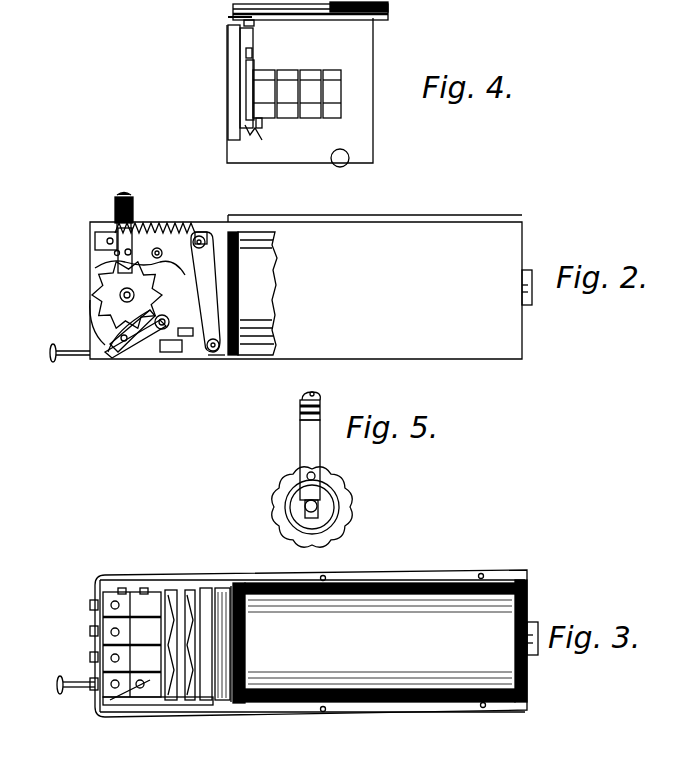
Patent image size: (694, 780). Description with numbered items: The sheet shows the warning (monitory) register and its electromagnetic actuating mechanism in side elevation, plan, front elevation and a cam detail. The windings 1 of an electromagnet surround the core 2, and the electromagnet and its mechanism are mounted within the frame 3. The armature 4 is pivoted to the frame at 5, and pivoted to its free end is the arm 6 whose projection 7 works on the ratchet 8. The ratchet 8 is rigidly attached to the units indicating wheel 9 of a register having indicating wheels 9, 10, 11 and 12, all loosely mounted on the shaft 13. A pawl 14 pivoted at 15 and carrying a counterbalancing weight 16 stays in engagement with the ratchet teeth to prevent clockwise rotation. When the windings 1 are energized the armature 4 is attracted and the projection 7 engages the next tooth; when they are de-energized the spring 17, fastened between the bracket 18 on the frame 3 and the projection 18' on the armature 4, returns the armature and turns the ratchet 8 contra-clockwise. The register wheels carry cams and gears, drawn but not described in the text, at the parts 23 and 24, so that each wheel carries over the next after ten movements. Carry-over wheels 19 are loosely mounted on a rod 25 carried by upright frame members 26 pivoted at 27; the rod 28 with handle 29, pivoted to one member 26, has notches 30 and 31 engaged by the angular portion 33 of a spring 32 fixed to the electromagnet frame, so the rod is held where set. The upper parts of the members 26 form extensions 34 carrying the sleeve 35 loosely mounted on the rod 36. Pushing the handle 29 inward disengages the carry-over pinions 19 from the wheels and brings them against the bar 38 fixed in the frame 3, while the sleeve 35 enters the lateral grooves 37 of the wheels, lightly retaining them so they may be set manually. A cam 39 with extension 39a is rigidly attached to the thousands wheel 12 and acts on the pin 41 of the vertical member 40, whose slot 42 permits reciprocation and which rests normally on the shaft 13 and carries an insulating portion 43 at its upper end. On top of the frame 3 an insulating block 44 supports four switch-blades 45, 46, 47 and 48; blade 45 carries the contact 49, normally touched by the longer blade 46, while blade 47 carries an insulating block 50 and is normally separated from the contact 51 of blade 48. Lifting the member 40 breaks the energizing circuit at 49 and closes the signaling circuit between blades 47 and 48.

In FIG. 3, the windings of an electromagnet 1 is at (400, 585).
In FIG. 3, the core 2 is at (236, 712).
In FIG. 4, the frame 3 is at (240, 130).
In FIG. 2, the frame 3 is at (450, 350).
In FIG. 2, the armature 4 is at (205, 260).
In FIG. 3, the armature 4 is at (226, 592).
In FIG. 2, the pivot 5 is at (195, 360).
In FIG. 3, the arm 6 is at (140, 710).
In FIG. 2, the projection 7 is at (115, 272).
In FIG. 3, the projection 7 is at (410, 778).
In FIG. 2, the ratchet 8 is at (122, 297).
In FIG. 3, the ratchet 8 is at (136, 705).
In FIG. 4, the units indicating wheel 9 is at (344, 96).
In FIG. 2, the units indicating wheel 9 is at (96, 312).
In FIG. 3, the units indicating wheel 9 is at (90, 676).
In FIG. 4, the tens indicating wheel 10 is at (311, 118).
In FIG. 3, the tens indicating wheel 10 is at (90, 656).
In FIG. 4, the hundreds indicating wheel 11 is at (289, 118).
In FIG. 3, the hundreds indicating wheel 11 is at (90, 632).
In FIG. 4, the thousands indicating wheel 12 is at (260, 128).
In FIG. 3, the thousands indicating wheel 12 is at (90, 605).
In FIG. 4, the shaft 13 is at (240, 114).
In FIG. 2, the shaft 13 is at (118, 294).
In FIG. 2, the pawl 14 is at (136, 362).
In FIG. 2, the pivot 15 is at (112, 362).
In FIG. 3, the pivot 15 is at (120, 705).
In FIG. 2, the counterbalancing weight 16 is at (140, 235).
In FIG. 2, the spring 17 is at (120, 245).
In FIG. 3, the spring 17 is at (207, 705).
In FIG. 2, the bracket 18 is at (77, 224).
In FIG. 2, the projection 18' is at (208, 214).
In FIG. 3, the projection 18' is at (219, 619).
In FIG. 2, the carry-over wheels 19 is at (140, 362).
In FIG. 3, the carry-over wheels 19 is at (88, 695).
In FIG. 4, the transfer pinion 23 is at (342, 118).
In FIG. 3, the transfer pinion 23 is at (100, 622).
In FIG. 4, the transfer pinion 24 is at (342, 80).
In FIG. 3, the transfer pinion 24 is at (100, 647).
In FIG. 2, the rod 25 is at (158, 362).
In FIG. 2, the upright frame members 26 is at (240, 300).
In FIG. 2, the pivot 27 is at (240, 276).
In FIG. 2, the rod 28 is at (68, 356).
In FIG. 3, the rod 28 is at (58, 690).
In FIG. 4, the handle 29 is at (343, 166).
In FIG. 2, the handle 29 is at (50, 360).
In FIG. 3, the handle 29 is at (56, 681).
In FIG. 2, the notch 30 is at (148, 362).
In FIG. 2, the notch 31 is at (152, 362).
In FIG. 2, the spring 32 is at (226, 360).
In FIG. 2, the angular portion 33 is at (180, 360).
In FIG. 2, the extensions 34 is at (183, 222).
In FIG. 3, the extensions 34 is at (180, 590).
In FIG. 2, the sleeve 35 is at (152, 222).
In FIG. 3, the sleeve 35 is at (160, 705).
In FIG. 2, the rod 36 is at (160, 246).
In FIG. 4, the lateral grooves 37 is at (344, 107).
In FIG. 2, the lateral grooves 37 is at (108, 272).
In FIG. 5, the lateral grooves 37 is at (275, 495).
In FIG. 3, the lateral grooves 37 is at (110, 668).
In FIG. 2, the bar 38 is at (200, 362).
In FIG. 3, the bar 38 is at (192, 588).
In FIG. 4, the cam 39 is at (250, 104).
In FIG. 5, the cam 39 is at (340, 498).
In FIG. 3, the cam 39 is at (108, 592).
In FIG. 4, the extension 39a is at (250, 96).
In FIG. 5, the extension 39a is at (335, 486).
In FIG. 4, the vertical member 40 is at (248, 82).
In FIG. 2, the vertical member 40 is at (118, 215).
In FIG. 5, the vertical member 40 is at (300, 443).
In FIG. 3, the vertical member 40 is at (141, 590).
In FIG. 4, the pin 41 is at (248, 66).
In FIG. 5, the pin 41 is at (308, 474).
In FIG. 3, the pin 41 is at (118, 590).
In FIG. 5, the slot 42 is at (318, 512).
In FIG. 4, the insulating portion 43 is at (245, 22).
In FIG. 5, the insulating portion 43 is at (300, 430).
In FIG. 4, the insulating block 44 is at (392, 12).
In FIG. 5, the insulating block 44 is at (305, 400).
In FIG. 4, the switch-blade 45 is at (378, 22).
In FIG. 4, the switch-blade 46 is at (246, 16).
In FIG. 2, the switch-blade 46 is at (138, 222).
In FIG. 4, the switch-blade 47 is at (395, 8).
In FIG. 5, the switch-blade 47 is at (318, 404).
In FIG. 4, the switch-blade 48 is at (400, 5).
In FIG. 2, the switch-blade 48 is at (124, 195).
In FIG. 5, the switch-blade 48 is at (313, 392).
In FIG. 4, the contact 49 is at (245, 38).
In FIG. 4, the insulating block 50 is at (290, 18).
In FIG. 5, the insulating block 50 is at (300, 410).
In FIG. 4, the contact 51 is at (232, 30).